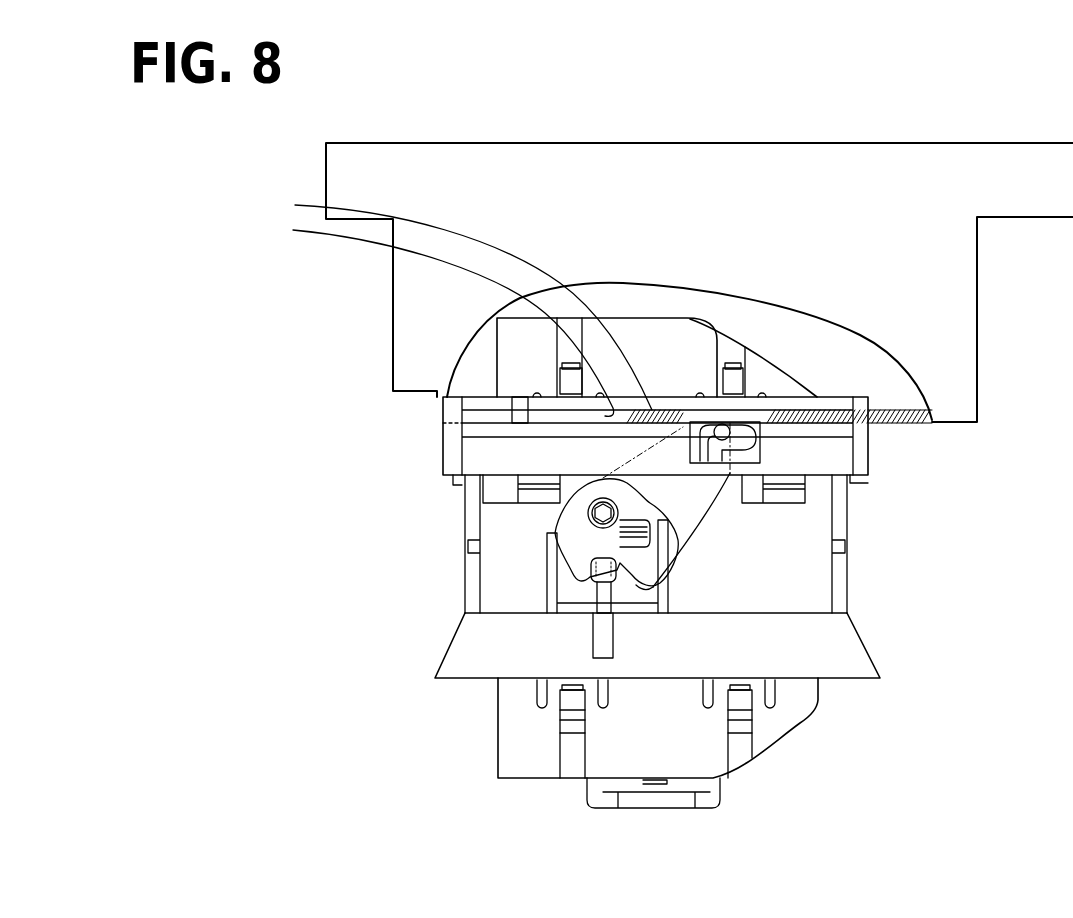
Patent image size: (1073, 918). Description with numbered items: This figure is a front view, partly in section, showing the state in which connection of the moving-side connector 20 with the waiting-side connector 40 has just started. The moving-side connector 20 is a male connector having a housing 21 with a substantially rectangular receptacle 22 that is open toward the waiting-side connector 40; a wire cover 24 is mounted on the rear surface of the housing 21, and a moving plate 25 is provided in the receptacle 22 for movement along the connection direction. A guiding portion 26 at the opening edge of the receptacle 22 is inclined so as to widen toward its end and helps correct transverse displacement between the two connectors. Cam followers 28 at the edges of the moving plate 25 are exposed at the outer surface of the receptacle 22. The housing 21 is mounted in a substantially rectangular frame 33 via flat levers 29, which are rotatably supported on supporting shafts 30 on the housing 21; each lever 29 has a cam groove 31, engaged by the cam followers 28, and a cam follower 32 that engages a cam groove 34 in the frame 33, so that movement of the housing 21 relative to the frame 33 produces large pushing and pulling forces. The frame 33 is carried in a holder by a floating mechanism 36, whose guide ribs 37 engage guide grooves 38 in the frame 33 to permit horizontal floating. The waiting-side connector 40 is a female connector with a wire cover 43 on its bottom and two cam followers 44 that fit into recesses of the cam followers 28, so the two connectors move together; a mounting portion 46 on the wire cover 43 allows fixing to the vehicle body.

The moving-side connector 20 is at (626, 432).
The housing 21 is at (502, 515).
The receptacle 22 is at (813, 585).
The wire cover 24 is at (517, 352).
The moving plate 25 is at (553, 583).
The guiding portion 26 is at (843, 635).
The cam followers 28 is at (603, 570).
The levers 29 is at (693, 493).
The supporting shafts 30 is at (620, 505).
The cam groove 31 is at (643, 583).
The cam follower 32 is at (704, 422).
The frame 33 is at (483, 457).
The cam grooves 34 is at (760, 460).
The floating mechanism 36 is at (438, 301).
The guide ribs 37 is at (458, 302).
The guide grooves 38 is at (439, 319).
The waiting-side connector 40 is at (586, 752).
The wire cover 43 is at (520, 763).
The cam followers 44 is at (603, 613).
The mounting portion 46 is at (605, 798).